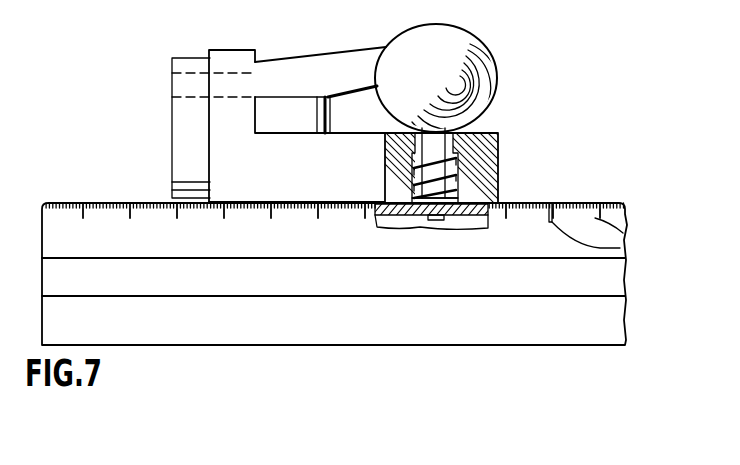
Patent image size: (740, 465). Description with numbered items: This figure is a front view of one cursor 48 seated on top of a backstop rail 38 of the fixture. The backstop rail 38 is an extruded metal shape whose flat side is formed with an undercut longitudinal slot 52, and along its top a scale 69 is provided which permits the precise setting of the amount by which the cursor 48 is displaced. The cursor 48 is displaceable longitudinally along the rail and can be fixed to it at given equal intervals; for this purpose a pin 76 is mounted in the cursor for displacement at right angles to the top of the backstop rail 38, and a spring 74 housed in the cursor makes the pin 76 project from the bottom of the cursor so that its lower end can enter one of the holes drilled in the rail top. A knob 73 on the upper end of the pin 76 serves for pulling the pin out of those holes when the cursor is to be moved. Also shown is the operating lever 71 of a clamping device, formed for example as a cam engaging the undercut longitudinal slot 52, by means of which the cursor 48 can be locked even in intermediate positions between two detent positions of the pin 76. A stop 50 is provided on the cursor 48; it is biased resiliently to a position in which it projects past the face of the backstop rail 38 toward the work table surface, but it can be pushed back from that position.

The backstop rail 38 is at (64, 198).
The cursor 48 is at (334, 186).
The stop 50 is at (186, 131).
The undercut longitudinal slot 52 is at (563, 293).
The scale 69 is at (620, 248).
The operating lever 71 is at (349, 62).
The knob 73 is at (467, 68).
The spring 74 is at (443, 180).
The pin 76 is at (438, 143).